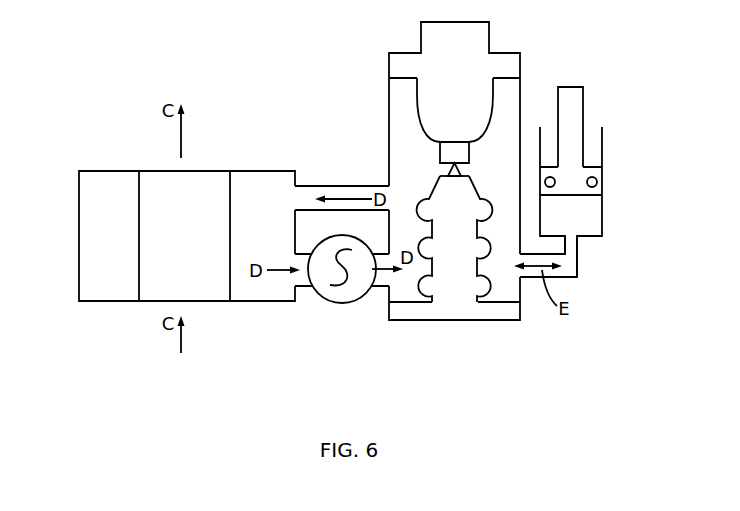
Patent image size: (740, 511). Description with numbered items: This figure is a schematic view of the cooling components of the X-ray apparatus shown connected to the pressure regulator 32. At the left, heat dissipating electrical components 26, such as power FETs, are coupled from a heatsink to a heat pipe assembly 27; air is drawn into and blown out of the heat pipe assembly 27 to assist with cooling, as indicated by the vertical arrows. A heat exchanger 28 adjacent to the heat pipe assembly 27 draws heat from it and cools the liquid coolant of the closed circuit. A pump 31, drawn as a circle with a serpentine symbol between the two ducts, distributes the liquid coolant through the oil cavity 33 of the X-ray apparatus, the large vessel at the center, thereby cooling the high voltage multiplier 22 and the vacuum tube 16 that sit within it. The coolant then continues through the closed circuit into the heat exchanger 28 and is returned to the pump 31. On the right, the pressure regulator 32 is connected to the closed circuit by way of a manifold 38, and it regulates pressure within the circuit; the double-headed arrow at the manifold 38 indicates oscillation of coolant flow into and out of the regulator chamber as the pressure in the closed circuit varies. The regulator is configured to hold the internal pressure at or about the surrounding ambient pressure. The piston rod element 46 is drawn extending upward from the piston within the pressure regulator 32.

The vacuum tube 16 is at (421, 115).
The high voltage multiplier 22 is at (456, 280).
The heat dissipating electrical components 26 is at (93, 175).
The heat pipe assembly 27 is at (157, 175).
The heat exchanger 28 is at (248, 177).
The pump 31 is at (343, 296).
The pressure regulator 32 is at (614, 211).
The oil cavity 33 is at (515, 90).
The manifold 38 is at (575, 247).
The piston rod 46 is at (578, 103).